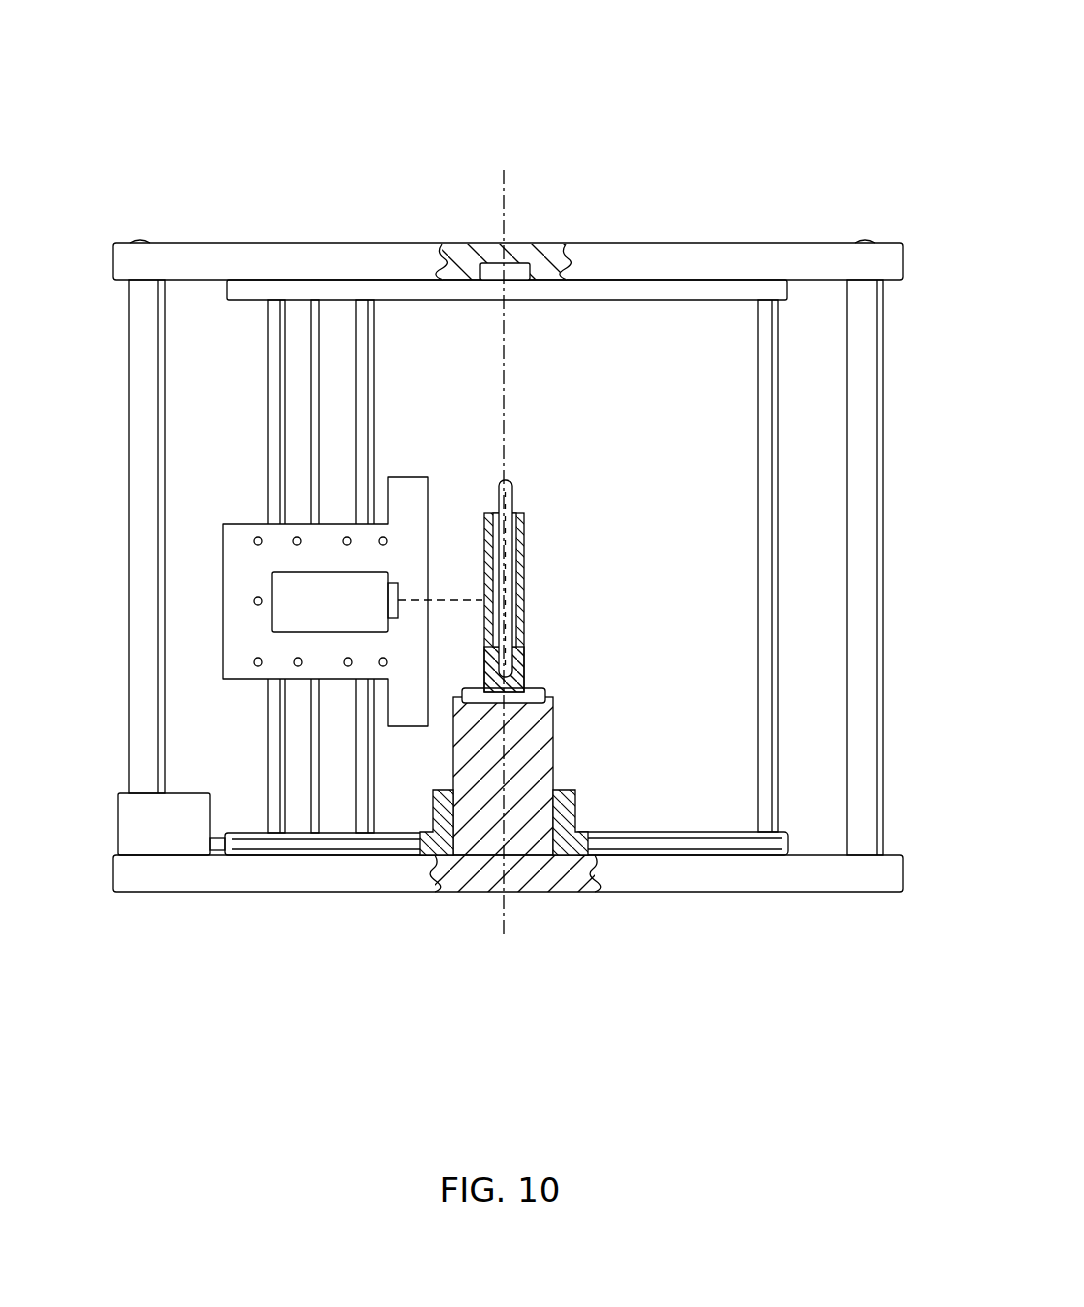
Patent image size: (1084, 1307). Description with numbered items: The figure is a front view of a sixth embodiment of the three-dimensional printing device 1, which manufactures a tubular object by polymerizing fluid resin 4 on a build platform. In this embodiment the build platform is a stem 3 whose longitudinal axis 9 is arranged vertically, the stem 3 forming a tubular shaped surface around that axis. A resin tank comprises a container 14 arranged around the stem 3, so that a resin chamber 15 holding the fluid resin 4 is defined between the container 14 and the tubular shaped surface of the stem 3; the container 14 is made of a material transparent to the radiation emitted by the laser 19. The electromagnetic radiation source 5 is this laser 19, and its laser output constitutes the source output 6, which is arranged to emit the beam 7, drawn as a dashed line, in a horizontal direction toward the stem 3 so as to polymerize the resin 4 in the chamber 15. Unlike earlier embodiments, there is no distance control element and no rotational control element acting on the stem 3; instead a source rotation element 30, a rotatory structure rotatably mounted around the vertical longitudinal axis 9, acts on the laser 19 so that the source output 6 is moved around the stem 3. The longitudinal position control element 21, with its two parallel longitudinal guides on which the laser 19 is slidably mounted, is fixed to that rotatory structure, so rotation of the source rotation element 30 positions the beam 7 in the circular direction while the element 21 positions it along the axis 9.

The 3D printing device 1 is at (688, 112).
The stem 3 is at (513, 492).
The fluid resin 4 is at (525, 533).
The electromagnetic radiation source 5 is at (268, 585).
The source output 6 is at (398, 614).
The beam 7 is at (447, 597).
The longitudinal axis 9 is at (505, 388).
The container 14 is at (525, 633).
The resin chamber 15 is at (525, 578).
The laser 19 is at (300, 616).
The longitudinal position control element 21 is at (266, 393).
The source rotation element 30 is at (577, 272).